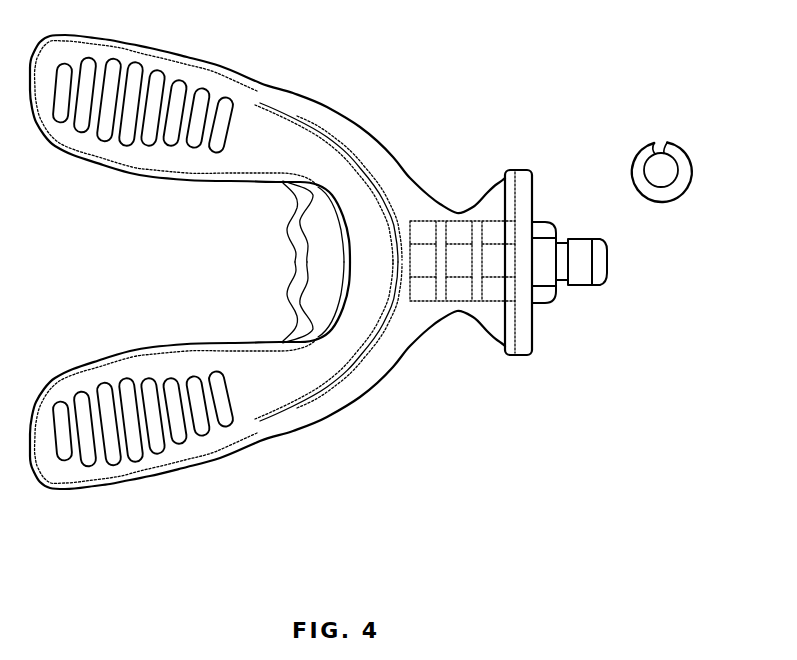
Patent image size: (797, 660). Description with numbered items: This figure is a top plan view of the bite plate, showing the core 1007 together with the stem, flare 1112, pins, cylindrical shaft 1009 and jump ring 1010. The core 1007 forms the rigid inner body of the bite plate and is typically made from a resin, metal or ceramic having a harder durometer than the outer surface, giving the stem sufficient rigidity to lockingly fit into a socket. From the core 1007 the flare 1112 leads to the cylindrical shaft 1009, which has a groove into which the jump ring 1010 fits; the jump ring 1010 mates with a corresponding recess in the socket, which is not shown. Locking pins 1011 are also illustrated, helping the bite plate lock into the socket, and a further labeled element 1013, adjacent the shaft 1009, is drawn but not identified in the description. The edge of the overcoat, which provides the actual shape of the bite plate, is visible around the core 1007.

The core 1007 is at (173, 352).
The cylindrical shaft 1009 is at (610, 260).
The jump ring 1010 is at (697, 168).
The locking pins 1011 is at (537, 221).
The nut 1013 is at (563, 290).
The flare 1112 is at (535, 343).